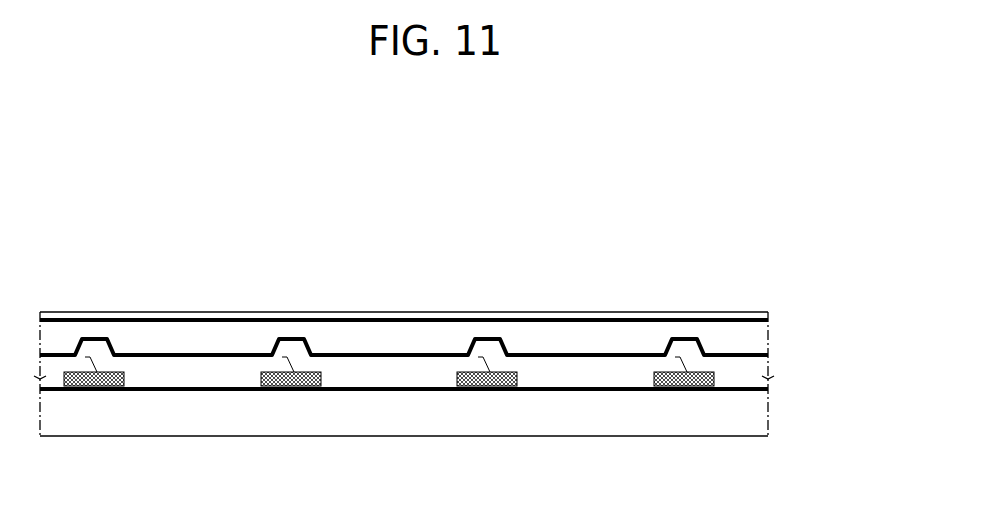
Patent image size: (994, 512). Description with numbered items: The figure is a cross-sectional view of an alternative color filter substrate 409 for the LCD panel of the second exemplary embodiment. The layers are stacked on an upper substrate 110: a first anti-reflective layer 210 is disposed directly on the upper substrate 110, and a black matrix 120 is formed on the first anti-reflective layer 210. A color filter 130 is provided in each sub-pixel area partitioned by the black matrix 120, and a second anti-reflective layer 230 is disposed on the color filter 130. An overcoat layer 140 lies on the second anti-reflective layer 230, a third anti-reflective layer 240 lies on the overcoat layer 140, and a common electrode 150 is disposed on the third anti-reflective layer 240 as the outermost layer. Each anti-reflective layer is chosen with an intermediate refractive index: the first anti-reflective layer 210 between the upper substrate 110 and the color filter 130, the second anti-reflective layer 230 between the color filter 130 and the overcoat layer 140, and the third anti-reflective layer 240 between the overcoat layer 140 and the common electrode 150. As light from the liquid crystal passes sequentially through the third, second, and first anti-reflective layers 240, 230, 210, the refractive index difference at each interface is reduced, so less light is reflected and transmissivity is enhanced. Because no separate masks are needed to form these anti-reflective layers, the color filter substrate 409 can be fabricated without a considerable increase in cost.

The upper substrate 110 is at (405, 428).
The black matrix 120 is at (487, 392).
The color filter 130 is at (567, 392).
The overcoat layer 140 is at (327, 342).
The common electrode 150 is at (248, 313).
The first anti-reflective layer 210 is at (168, 391).
The second anti-reflective layer 230 is at (642, 358).
The third anti-reflective layer 240 is at (723, 322).
The color filter substrate 409 is at (774, 352).